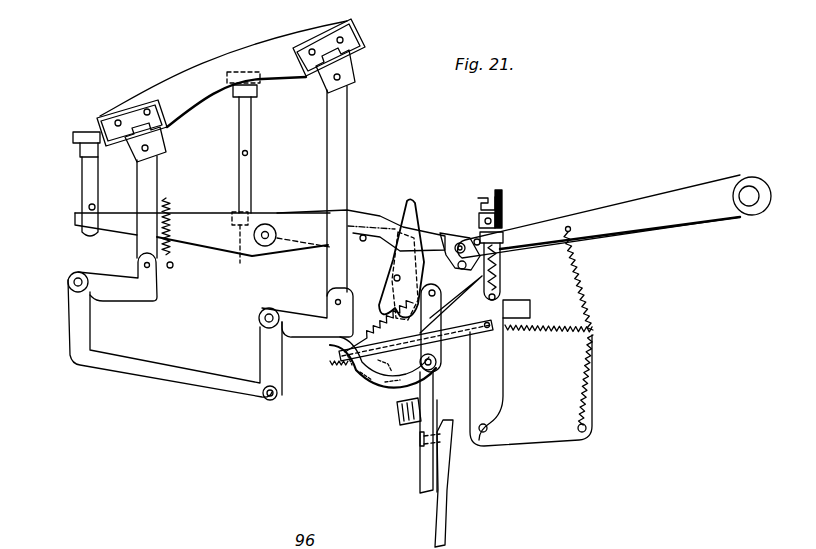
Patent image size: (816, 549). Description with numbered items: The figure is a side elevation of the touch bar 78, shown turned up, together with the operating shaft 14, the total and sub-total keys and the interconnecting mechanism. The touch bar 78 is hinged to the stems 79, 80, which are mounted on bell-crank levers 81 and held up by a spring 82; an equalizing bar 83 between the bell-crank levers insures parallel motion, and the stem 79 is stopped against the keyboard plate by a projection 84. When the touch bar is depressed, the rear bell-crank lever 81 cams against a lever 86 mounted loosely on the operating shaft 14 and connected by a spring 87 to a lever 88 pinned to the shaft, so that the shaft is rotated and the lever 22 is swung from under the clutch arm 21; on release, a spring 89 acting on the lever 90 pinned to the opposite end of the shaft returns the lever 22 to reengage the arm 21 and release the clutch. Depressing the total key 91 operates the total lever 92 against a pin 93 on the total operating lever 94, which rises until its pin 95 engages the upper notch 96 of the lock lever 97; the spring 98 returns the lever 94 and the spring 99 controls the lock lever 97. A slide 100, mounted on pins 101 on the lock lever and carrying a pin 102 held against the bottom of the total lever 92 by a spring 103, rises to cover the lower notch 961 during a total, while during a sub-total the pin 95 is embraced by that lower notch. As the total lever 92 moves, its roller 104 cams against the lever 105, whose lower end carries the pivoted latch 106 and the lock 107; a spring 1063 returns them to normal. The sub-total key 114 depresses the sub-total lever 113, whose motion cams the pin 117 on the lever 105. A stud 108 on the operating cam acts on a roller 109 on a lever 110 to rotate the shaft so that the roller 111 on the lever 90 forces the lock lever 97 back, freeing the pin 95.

The touch bar 78 is at (225, 45).
The stem 79 is at (161, 160).
The stem 80 is at (347, 118).
The projection 84 is at (160, 180).
The clutch arm 21 is at (152, 305).
The equalizing bar 83 is at (179, 388).
The bell-crank lever 81 is at (294, 316).
The total key 91 is at (83, 172).
The sub-total key 114 is at (252, 178).
The spring 82 is at (172, 205).
The total lever 92 is at (213, 242).
The sub-total lever 113 is at (330, 246).
The roller 104 is at (388, 215).
The lever 105 is at (409, 206).
The pin 117 is at (392, 302).
The lever 88 is at (432, 284).
The lever 86 is at (360, 364).
The spring 87 is at (379, 326).
The spring 1063 is at (330, 362).
The pivoted latch 106 is at (378, 362).
The lock 107 is at (392, 411).
The stud 108 is at (420, 437).
The roller 109 is at (422, 418).
The lever 110 is at (434, 388).
The lever 22 is at (437, 404).
The lever 90 is at (490, 332).
The pin 102 is at (451, 303).
The pin 93 is at (448, 238).
The pin 95 is at (468, 245).
The total operating lever 94 is at (637, 205).
The spring 98 is at (585, 258).
The spring 99 is at (593, 368).
The spring 89 is at (548, 340).
The lock lever 97 is at (503, 200).
The upper notch 96 is at (486, 197).
The lower notch 961 is at (480, 204).
The pins 101 is at (505, 232).
The slide 100 is at (500, 251).
The spring 103 is at (503, 277).
The roller 111 is at (531, 305).
The operating shaft 14 is at (470, 360).